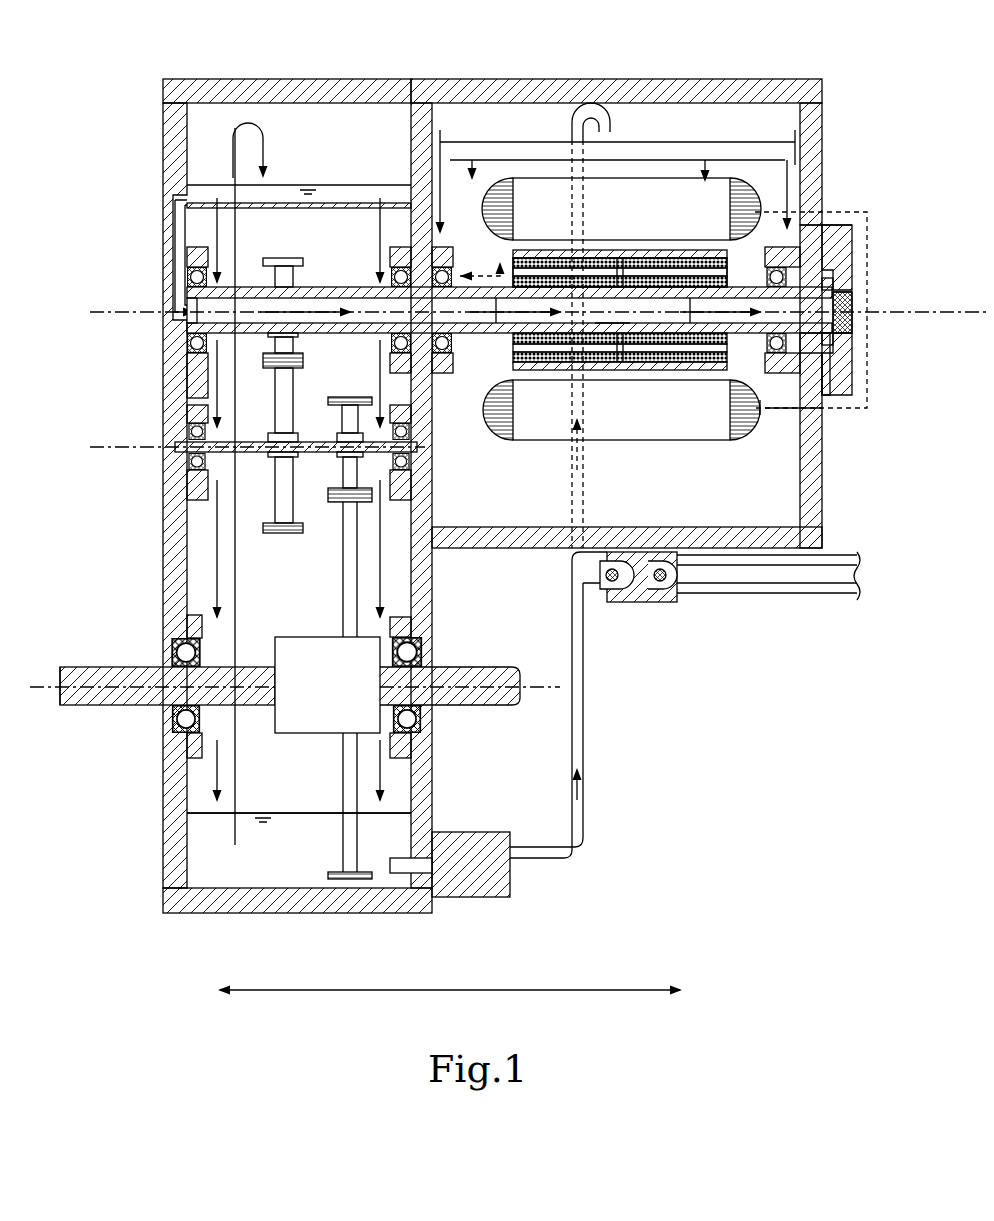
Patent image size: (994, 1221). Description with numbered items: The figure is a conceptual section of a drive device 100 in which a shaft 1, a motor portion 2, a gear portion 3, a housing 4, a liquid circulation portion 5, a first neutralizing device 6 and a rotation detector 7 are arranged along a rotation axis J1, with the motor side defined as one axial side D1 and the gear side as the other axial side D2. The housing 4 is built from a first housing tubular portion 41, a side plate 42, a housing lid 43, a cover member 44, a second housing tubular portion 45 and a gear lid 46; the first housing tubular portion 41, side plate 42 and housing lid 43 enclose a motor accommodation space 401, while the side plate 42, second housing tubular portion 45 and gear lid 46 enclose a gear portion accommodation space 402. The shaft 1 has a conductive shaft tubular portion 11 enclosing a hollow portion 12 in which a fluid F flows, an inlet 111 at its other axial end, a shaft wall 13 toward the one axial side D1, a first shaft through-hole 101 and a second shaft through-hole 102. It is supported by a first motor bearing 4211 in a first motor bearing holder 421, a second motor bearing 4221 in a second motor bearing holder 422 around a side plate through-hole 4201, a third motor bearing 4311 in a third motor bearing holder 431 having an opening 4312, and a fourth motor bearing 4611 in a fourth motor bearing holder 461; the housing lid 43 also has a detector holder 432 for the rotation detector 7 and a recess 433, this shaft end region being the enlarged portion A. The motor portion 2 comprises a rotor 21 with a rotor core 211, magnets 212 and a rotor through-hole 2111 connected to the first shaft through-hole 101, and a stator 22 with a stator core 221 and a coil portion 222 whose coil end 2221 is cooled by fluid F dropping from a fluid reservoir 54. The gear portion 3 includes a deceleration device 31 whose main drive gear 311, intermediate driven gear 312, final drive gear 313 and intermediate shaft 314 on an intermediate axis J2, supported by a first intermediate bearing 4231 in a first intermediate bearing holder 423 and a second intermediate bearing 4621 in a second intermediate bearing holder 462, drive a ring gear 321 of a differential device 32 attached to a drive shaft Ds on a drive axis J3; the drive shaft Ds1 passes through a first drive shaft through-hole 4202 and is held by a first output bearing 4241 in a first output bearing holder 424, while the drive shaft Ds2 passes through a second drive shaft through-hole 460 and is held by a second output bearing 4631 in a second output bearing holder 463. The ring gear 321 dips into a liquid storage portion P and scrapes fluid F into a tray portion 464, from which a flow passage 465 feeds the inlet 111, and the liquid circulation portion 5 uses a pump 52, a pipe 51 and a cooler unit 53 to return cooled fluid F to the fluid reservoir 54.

The drive device 100 is at (815, 62).
The housing 4 is at (832, 94).
The second housing tubular portion 45 is at (262, 80).
The first housing tubular portion 41 is at (640, 80).
The gear lid 46 is at (165, 152).
The side plate 42 is at (420, 80).
The housing lid 43 is at (822, 132).
The third motor bearing holder 431 is at (822, 172).
The detector holder 432 is at (852, 256).
The opening 4312 is at (852, 228).
The portion A is at (866, 214).
The rotation detector 7 is at (790, 275).
The cover member 44 is at (835, 385).
The shaft wall 13 is at (852, 302).
The recess 433 is at (852, 322).
The first neutralizing device 6 is at (833, 340).
The second shaft through-hole 102 is at (825, 355).
The third motor bearing 4311 is at (822, 410).
The flow passage 465 is at (172, 236).
The fourth motor bearing holder 461 is at (195, 378).
The fourth motor bearing 4611 is at (190, 348).
The inlet 111 is at (188, 318).
The second intermediate bearing holder 462 is at (195, 488).
The second intermediate bearing 4621 is at (190, 462).
The second output bearing holder 463 is at (190, 628).
The second output bearing 4631 is at (175, 648).
The second drive shaft through-hole 460 is at (185, 745).
The second motor bearing holder 422 is at (400, 255).
The second motor bearing 4221 is at (388, 277).
The side plate through-hole 4201 is at (400, 358).
The first motor bearing holder 421 is at (443, 368).
The first motor bearing 4211 is at (460, 275).
The first intermediate bearing holder 423 is at (420, 488).
The first intermediate bearing 4231 is at (420, 462).
The first output bearing holder 424 is at (432, 616).
The first output bearing 4241 is at (423, 645).
The first drive shaft through-hole 4202 is at (423, 740).
The gear portion accommodation space 402 is at (318, 611).
The tray portion 464 is at (262, 207).
The liquid storage portion P is at (318, 812).
The rotation axis J1 is at (118, 308).
The shaft tubular portion 11 is at (256, 340).
The shaft 1 is at (530, 335).
The first shaft through-hole 101 is at (605, 340).
The hollow portion 12 is at (492, 325).
The fluid F is at (690, 335).
The intermediate axis J2 is at (112, 445).
The intermediate shaft 314 is at (320, 452).
The drive axis J3 is at (46, 685).
The drive shaft Ds is at (150, 705).
The drive shaft on the other axial side Ds2 is at (100, 705).
The drive shaft on the one axial side Ds1 is at (485, 705).
The differential device 32 is at (290, 744).
The gear portion 3 is at (252, 512).
The deceleration device 31 is at (300, 255).
The main drive gear 311 is at (303, 262).
The intermediate driven gear 312 is at (283, 533).
The final drive gear 313 is at (350, 397).
The ring gear 321 is at (350, 880).
The motor portion 2 is at (546, 175).
The motor accommodation space 401 is at (562, 508).
The rotor 21 is at (690, 252).
The rotor core 211 is at (612, 255).
The rotor through-hole 2111 is at (625, 266).
The magnet 212 is at (547, 240).
The stator 22 is at (662, 440).
The stator core 221 is at (616, 440).
The coil portion 222 is at (735, 440).
The coil end 2221 is at (757, 432).
The fluid reservoir 54 is at (464, 160).
The liquid circulation portion 5 is at (615, 648).
The pipe 51 is at (585, 738).
The pump 52 is at (478, 897).
The cooler unit 53 is at (640, 602).
The one axial side D1 is at (477, 993).
The other axial side D2 is at (196, 993).